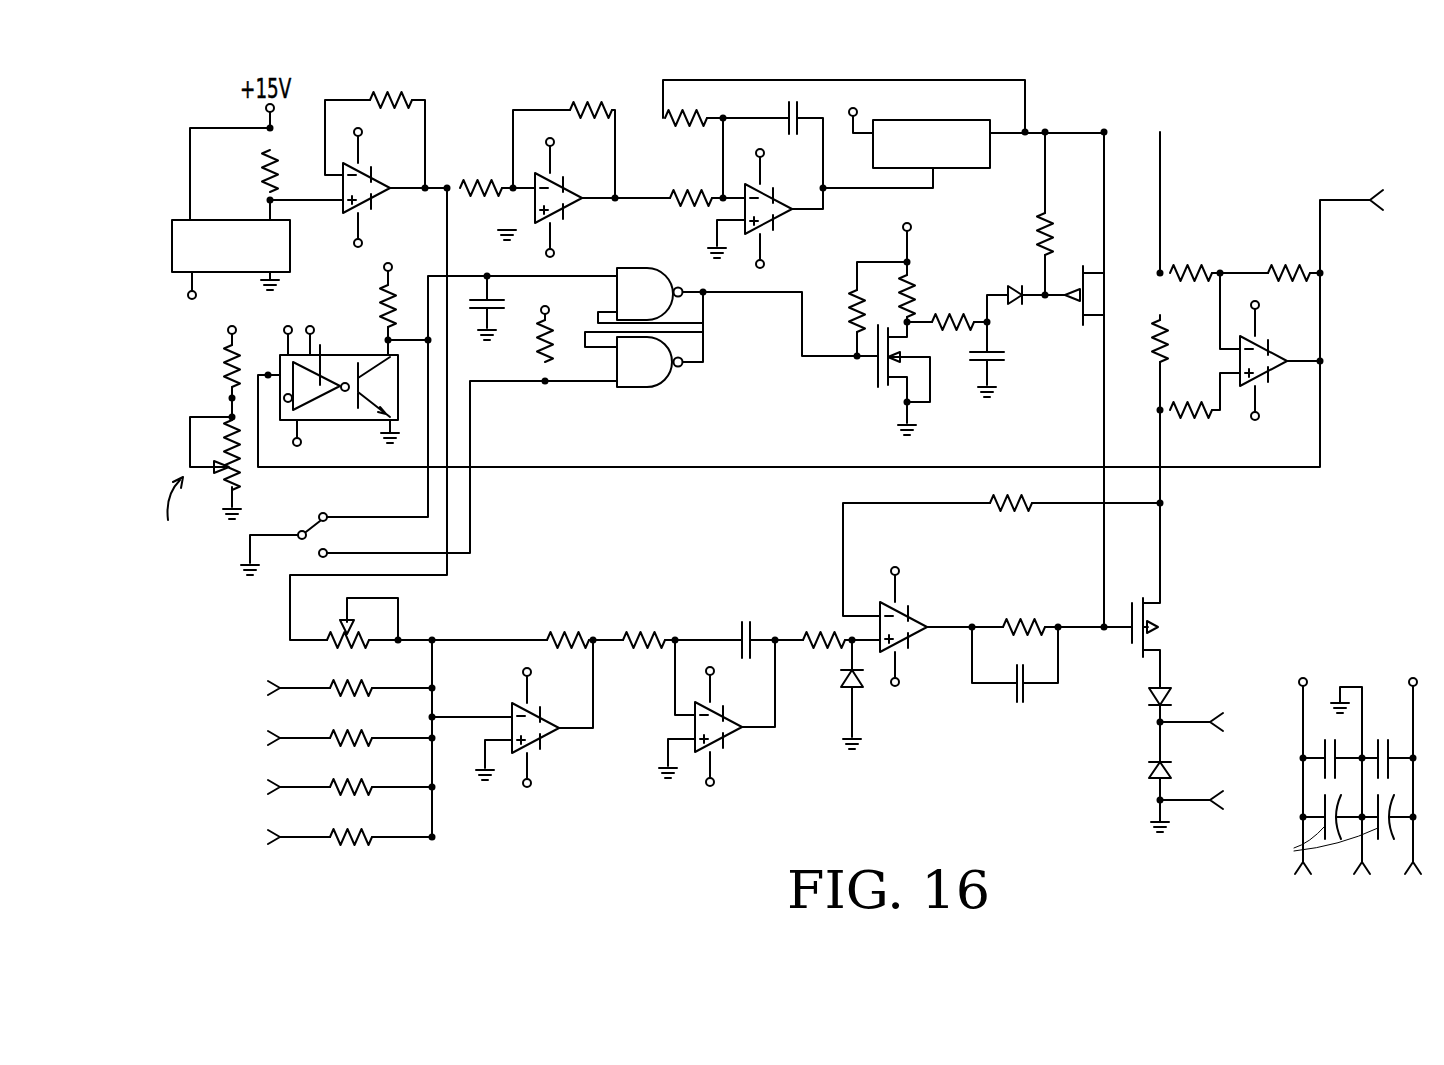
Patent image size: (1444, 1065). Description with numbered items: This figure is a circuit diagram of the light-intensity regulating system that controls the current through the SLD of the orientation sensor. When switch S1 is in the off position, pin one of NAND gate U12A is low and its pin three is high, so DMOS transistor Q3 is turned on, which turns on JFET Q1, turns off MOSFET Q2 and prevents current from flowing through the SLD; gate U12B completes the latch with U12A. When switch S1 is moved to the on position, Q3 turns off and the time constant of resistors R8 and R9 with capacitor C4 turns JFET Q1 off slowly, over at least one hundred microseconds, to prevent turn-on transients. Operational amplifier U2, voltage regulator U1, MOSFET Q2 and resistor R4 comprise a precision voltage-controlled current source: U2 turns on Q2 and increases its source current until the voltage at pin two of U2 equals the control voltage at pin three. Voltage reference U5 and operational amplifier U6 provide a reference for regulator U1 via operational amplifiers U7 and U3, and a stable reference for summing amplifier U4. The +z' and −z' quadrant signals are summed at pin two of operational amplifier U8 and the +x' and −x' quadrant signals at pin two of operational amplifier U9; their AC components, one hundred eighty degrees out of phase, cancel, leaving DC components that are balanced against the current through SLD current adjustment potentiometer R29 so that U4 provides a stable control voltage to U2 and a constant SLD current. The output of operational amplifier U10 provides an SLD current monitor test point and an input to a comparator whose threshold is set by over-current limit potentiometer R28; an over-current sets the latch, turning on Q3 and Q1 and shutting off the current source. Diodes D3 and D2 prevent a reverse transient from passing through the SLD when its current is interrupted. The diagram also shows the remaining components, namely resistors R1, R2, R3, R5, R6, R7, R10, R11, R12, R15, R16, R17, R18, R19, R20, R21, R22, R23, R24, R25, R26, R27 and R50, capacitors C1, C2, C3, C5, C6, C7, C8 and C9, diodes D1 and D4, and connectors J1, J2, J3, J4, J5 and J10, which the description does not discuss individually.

The resistor 1M R1 is at (1061, 226).
The resistor 10K R2 is at (1021, 604).
The resistor 4.99K R3 is at (1012, 495).
The resistor R4 is at (1180, 341).
The resistor 44.2K R5 is at (678, 121).
The resistor 44.2K R6 is at (677, 199).
The resistor 7.15K R7 is at (254, 168).
The resistor R8 is at (900, 257).
The resistor R9 is at (952, 322).
The resistor 51K R10 is at (836, 297).
The resistor 10K R11 is at (581, 97).
The resistor 6.95K R12 is at (474, 189).
The resistor 3.01K R15 is at (325, 679).
The resistor 3.01K R16 is at (560, 614).
The resistor 3.01K R17 is at (319, 729).
The resistor 3.01K R18 is at (325, 778).
The resistor 49.9K R19 is at (636, 613).
The resistor 3.01K R20 is at (319, 828).
The resistor 7.15K R21 is at (408, 90).
The resistor 10K R22 is at (1191, 243).
The resistor 10K R23 is at (1285, 241).
The resistor 4.99K R24 is at (1192, 413).
The resistor 5.1K R25 is at (543, 320).
The resistor 5.1K R26 is at (202, 348).
The resistor 5.1K R27 is at (373, 285).
The over-current limit potentiometer R28 is at (217, 515).
The SLD current adjustment potentiometer R29 is at (401, 612).
The resistor 4.99K R50 is at (812, 613).
The capacitor 1uF C1 is at (788, 103).
The capacitor 100pF C2 is at (1000, 690).
The capacitor 2uF C3 is at (725, 624).
The capacitor C4 is at (1016, 376).
The capacitor .01 C5 is at (1382, 726).
The capacitor .01 C6 is at (1307, 726).
The capacitor 4.7uF C7 is at (1305, 834).
The capacitor 4.7uF C8 is at (1391, 831).
The capacitor 1.0 C9 is at (517, 300).
The voltage regulator U1 is at (917, 137).
The operational amplifier U2 is at (912, 615).
The operational amplifier U3 is at (772, 210).
The summing amplifier U4 is at (719, 725).
The voltage reference U5 is at (260, 256).
The operational amplifier U6 is at (363, 185).
The operational amplifier U7 is at (557, 195).
The operational amplifier U8 is at (531, 725).
The operational amplifier U9 is at (323, 387).
The operational amplifier U10 is at (1269, 363).
The NAND gate U12A is at (631, 282).
The 74HCT00 NAND gate U12B is at (648, 393).
The JFET Q1 is at (1078, 311).
The MOSFET Q2 is at (1187, 611).
The DMOS transistor Q3 is at (882, 380).
The 1N914 diode D1 is at (1007, 265).
The diode D2 is at (1186, 808).
The diode D3 is at (1173, 693).
The 1N914 diode D4 is at (848, 703).
The -15V connector J1 is at (1294, 882).
The GND connector J2 is at (1365, 881).
The -15V connector J3 is at (1418, 881).
The laser anode connector J4 is at (1230, 722).
The laser cathode connector J5 is at (1230, 802).
The current monitor connector J10 is at (1380, 166).
The switch S1 is at (312, 531).